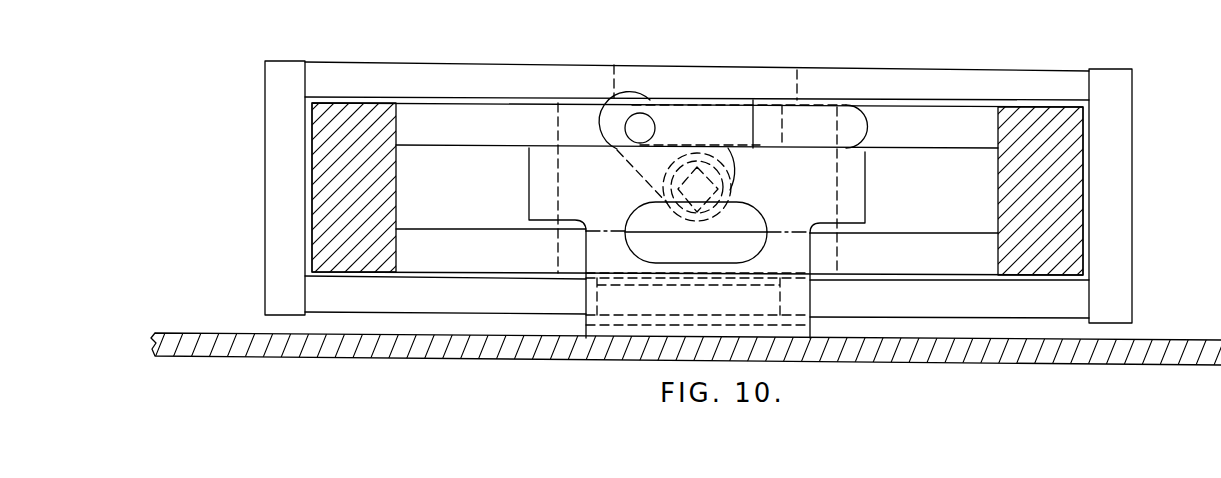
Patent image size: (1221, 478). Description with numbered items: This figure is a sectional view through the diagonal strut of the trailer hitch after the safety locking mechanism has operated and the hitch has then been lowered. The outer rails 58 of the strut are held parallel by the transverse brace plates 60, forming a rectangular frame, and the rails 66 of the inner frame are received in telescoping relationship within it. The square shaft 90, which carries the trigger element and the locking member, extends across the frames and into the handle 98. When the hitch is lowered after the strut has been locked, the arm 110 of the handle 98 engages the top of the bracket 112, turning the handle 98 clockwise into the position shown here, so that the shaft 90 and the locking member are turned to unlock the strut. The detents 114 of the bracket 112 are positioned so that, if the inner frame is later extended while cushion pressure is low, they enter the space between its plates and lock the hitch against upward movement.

The outer rails 58 is at (277, 70).
The transverse brace plates 60 is at (958, 80).
The rails 66 is at (373, 251).
The square shaft 90 is at (722, 189).
The handle 98 is at (862, 129).
The arm 110 is at (640, 128).
The bracket 112 is at (800, 262).
The detents 114 is at (540, 188).